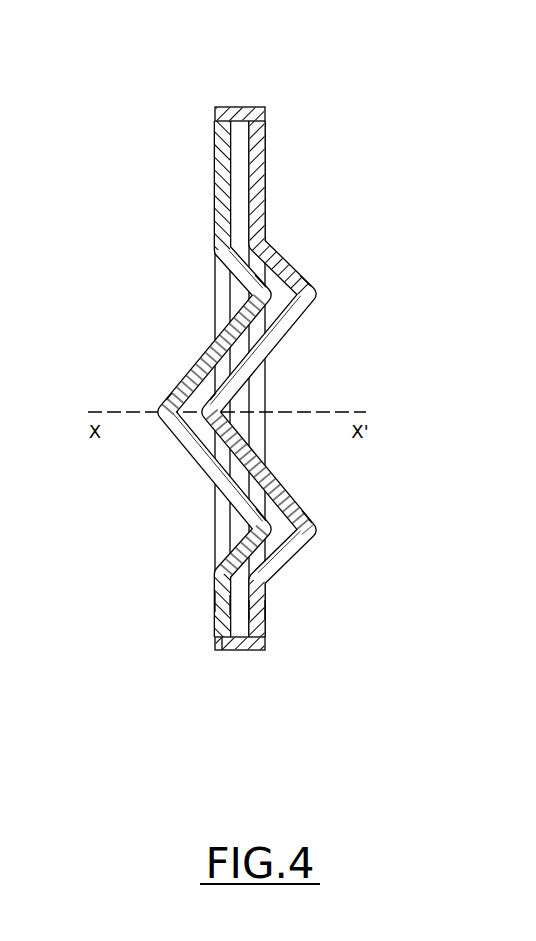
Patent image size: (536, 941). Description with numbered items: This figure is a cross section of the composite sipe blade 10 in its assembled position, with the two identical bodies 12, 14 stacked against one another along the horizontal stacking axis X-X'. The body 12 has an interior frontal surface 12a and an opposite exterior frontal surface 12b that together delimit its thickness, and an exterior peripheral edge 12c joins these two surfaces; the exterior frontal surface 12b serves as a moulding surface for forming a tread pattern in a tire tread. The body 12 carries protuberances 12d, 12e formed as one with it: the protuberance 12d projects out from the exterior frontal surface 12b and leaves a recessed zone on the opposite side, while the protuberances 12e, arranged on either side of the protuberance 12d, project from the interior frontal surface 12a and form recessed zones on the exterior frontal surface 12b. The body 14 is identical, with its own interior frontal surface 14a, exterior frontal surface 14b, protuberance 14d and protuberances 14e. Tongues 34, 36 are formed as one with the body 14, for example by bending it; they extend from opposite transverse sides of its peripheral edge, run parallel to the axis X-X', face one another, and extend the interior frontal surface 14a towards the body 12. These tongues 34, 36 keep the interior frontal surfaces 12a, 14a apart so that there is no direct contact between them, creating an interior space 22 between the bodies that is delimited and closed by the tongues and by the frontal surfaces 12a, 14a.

The composite sipe blade 10 is at (329, 74).
The body 12 is at (210, 157).
The interior frontal surface 12a is at (231, 585).
The exterior frontal surface 12b is at (215, 598).
The exterior peripheral edge 12c is at (218, 650).
The protuberance 12d is at (160, 410).
The protuberances 12e is at (260, 296).
The body 14 is at (298, 267).
The interior frontal surface 14a is at (248, 592).
The exterior frontal surface 14b is at (266, 605).
The protuberance 14d is at (213, 411).
The protuberances 14e is at (318, 294).
The interior space 22 is at (270, 326).
The tongue 34 is at (245, 650).
The tongue 36 is at (240, 115).